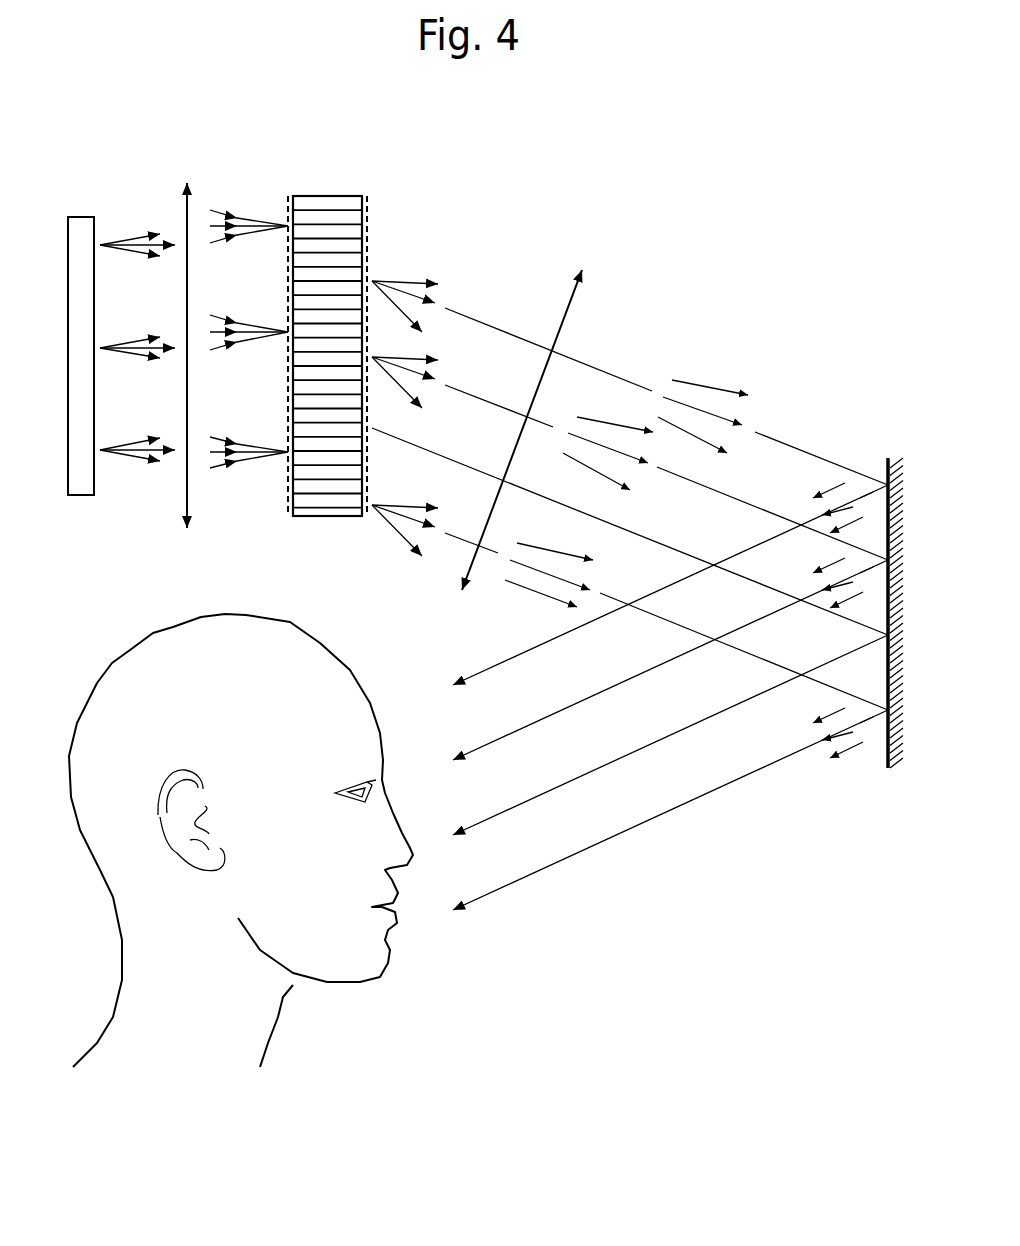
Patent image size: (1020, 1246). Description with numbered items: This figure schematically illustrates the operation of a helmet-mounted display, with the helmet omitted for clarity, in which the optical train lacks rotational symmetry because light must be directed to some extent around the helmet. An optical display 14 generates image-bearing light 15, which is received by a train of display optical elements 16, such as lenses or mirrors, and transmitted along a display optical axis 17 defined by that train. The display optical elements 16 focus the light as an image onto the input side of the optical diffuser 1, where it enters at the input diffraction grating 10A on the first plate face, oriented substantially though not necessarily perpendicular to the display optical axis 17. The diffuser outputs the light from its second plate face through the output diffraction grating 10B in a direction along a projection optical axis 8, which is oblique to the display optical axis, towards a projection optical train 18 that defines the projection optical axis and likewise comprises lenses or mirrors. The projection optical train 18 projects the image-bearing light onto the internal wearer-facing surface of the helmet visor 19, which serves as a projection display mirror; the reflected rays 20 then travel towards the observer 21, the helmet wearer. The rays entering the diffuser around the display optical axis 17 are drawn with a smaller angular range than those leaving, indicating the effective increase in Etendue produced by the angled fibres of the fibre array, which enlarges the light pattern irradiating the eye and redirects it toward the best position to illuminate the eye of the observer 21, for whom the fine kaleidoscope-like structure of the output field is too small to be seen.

The optical diffuser 1 is at (352, 192).
The input diffraction grating 10A is at (283, 210).
The output diffraction grating 10B is at (371, 215).
The projection optical axis 8 is at (407, 292).
The optical display 14 is at (82, 228).
The image-bearing light 15 is at (138, 235).
The display optical elements 16 is at (190, 217).
The display optical axis 17 is at (262, 330).
The projection optical train 18 is at (572, 298).
The helmet visor 19 is at (885, 468).
The reflected light rays 20 is at (587, 848).
The observer 21 is at (363, 958).